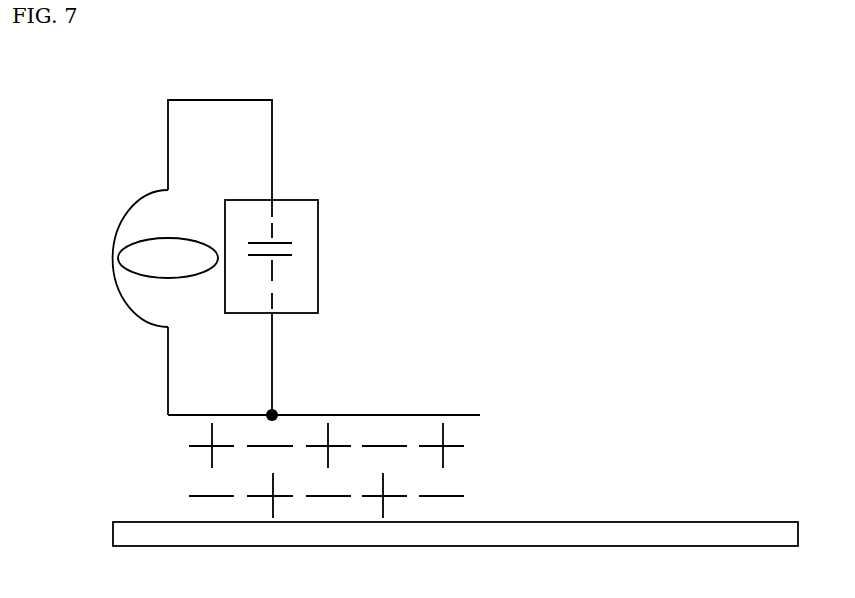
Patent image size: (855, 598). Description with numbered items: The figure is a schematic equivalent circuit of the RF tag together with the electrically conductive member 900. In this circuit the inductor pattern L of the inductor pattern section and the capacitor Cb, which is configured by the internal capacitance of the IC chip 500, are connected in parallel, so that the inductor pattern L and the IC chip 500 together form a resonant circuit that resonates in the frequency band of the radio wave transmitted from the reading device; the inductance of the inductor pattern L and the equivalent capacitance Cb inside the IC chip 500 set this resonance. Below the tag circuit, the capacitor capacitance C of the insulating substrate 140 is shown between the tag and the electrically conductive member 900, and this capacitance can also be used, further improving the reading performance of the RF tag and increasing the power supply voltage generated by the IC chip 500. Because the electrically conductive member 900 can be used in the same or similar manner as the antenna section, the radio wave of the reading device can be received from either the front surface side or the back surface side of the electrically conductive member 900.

The inductor pattern L is at (113, 223).
The IC chip 500 is at (318, 215).
The capacitor Cb is at (292, 254).
The insulating substrate 140 is at (448, 425).
The capacitor capacitance C is at (485, 414).
The electrically conductive member 900 is at (467, 547).